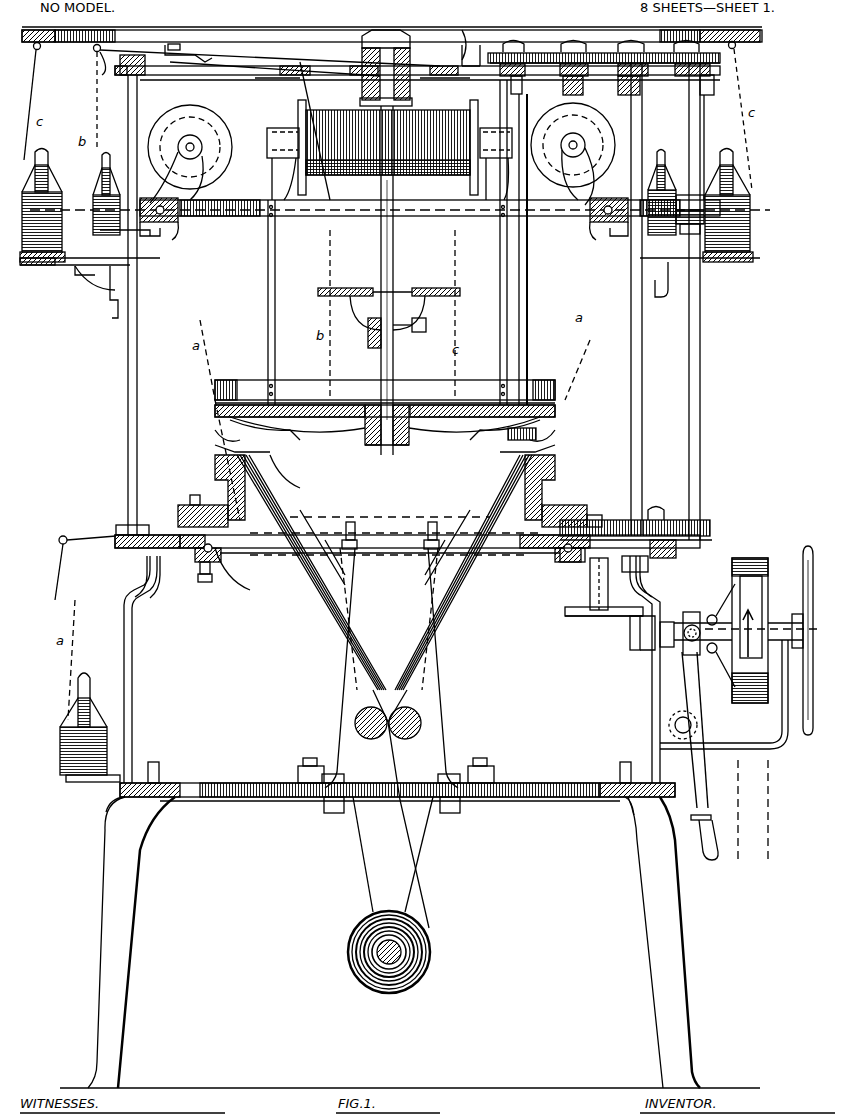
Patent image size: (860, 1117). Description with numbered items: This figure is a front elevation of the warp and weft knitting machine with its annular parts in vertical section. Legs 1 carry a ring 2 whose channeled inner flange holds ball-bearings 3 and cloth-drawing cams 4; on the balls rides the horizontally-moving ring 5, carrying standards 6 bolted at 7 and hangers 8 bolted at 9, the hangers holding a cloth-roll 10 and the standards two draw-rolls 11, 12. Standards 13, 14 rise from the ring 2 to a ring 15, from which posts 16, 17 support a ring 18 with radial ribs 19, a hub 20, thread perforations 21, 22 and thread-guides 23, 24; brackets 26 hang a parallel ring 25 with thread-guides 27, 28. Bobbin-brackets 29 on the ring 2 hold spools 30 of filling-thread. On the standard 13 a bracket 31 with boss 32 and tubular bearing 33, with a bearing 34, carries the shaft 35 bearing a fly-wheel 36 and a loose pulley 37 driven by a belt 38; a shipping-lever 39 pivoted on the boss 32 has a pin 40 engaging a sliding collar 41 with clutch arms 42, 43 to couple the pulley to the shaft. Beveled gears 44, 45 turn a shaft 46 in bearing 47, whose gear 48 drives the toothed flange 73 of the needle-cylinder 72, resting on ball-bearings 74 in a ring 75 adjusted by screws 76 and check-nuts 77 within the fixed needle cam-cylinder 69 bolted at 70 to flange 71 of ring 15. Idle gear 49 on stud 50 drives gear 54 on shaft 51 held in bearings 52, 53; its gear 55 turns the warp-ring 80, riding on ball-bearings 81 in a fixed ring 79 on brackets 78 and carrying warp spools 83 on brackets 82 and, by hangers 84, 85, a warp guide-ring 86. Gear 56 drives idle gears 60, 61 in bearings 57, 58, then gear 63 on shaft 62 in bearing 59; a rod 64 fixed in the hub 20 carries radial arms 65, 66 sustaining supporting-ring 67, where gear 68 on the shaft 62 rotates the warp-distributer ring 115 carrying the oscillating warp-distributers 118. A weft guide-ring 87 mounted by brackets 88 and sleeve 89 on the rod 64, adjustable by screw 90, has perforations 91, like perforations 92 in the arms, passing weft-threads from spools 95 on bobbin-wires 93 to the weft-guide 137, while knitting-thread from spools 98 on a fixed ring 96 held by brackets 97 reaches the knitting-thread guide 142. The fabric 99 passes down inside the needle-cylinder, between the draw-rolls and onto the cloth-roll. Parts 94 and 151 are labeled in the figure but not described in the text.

The legs or standards 1 is at (103, 973).
The ring 2 is at (118, 812).
The ball-bearings 3 is at (180, 785).
The cloth-drawing cams 4 is at (389, 763).
The horizontally-moving ring 5 is at (542, 784).
The standards 6 is at (438, 688).
The bolts 7 is at (300, 766).
The hangers 8 is at (362, 872).
The bolts 9 is at (330, 813).
The cloth-roll 10 is at (391, 954).
The draw-roll 11 is at (371, 731).
The draw-roll 12 is at (405, 731).
The standard 13 is at (652, 694).
The standard 14 is at (133, 688).
The ring 15 is at (162, 578).
The post 16 is at (128, 461).
The post 17 is at (642, 404).
The ring 18 is at (333, 66).
The radial ribs 19 is at (360, 90).
The hub 20 is at (410, 52).
The perforation 21 is at (300, 62).
The perforation 22 is at (481, 50).
The thread-guide 23 is at (93, 52).
The thread-guide 24 is at (462, 58).
The ring 25 is at (758, 36).
The brackets 26 is at (200, 55).
The thread-guide 27 is at (34, 48).
The thread-guide 28 is at (737, 48).
The bobbin-brackets 29 is at (70, 782).
The bobbins or spools of filling-thread 30 is at (62, 750).
The bracket 31 is at (782, 752).
The boss 32 is at (698, 728).
The sleeve or tubular bearing 33 is at (785, 622).
The tubular bearing 34 is at (666, 622).
The shaft 35 is at (630, 640).
The fly-wheel 36 is at (806, 546).
The pulley 37 is at (760, 566).
The belt 38 is at (753, 839).
The shipping-lever 39 is at (708, 780).
The stud or pin 40 is at (694, 624).
The sliding collar 41 is at (720, 665).
The clutch arm 42 is at (710, 615).
The clutch arm 43 is at (703, 667).
The beveled gear 44 is at (642, 652).
The beveled gear 45 is at (565, 611).
The shaft 46 is at (600, 618).
The tubular bearing 47 is at (590, 580).
The gear 48 is at (604, 511).
The idle or intermediate gear 49 is at (660, 504).
The stud 50 is at (648, 566).
The shaft 51 is at (700, 452).
The bearing 52 is at (678, 548).
The bearing 53 is at (711, 137).
The gear 54 is at (712, 522).
The gear 55 is at (690, 195).
The gear 56 is at (715, 63).
The tubular bearing 57 is at (640, 85).
The tubular bearing 58 is at (583, 85).
The tubular bearing 59 is at (522, 85).
The idle or intermediate gear 60 is at (650, 53).
The idle or intermediate gear 61 is at (575, 44).
The shaft 62 is at (522, 284).
The gear 63 is at (513, 44).
The rod 64 is at (394, 356).
The radial arm 65 is at (348, 432).
The radial arm 66 is at (402, 446).
The supporting-ring 67 is at (292, 440).
The gear 68 is at (476, 440).
The needle cam-cylinder 69 is at (556, 476).
The bolts 70 is at (216, 490).
The annular flange 71 is at (178, 512).
The needle-cylinder 72 is at (407, 535).
The annular flange 73 is at (578, 510).
The ball-bearings 74 is at (220, 560).
The ring 75 is at (560, 556).
The adjusting-screws 76 is at (205, 582).
The check-nuts 77 is at (235, 580).
The brackets 78 is at (165, 225).
The fixed ring 79 is at (140, 235).
The traveling ring (warp-ring) 80 is at (232, 202).
The ball-bearings 81 is at (175, 240).
The brackets 82 is at (202, 144).
The spools of warp-threads 83 is at (210, 118).
The hanger 84 is at (276, 318).
The hanger 85 is at (500, 306).
The warp guide-ring 86 is at (215, 392).
The weft guide-ring 87 is at (420, 290).
The brackets 88 is at (360, 312).
The sleeve 89 is at (368, 345).
The screw 90 is at (427, 326).
The perforations 91 is at (340, 292).
The perforations 92 is at (335, 408).
The bobbin-wires 93 is at (110, 233).
The bar 94 is at (100, 283).
The spools of weft-thread 95 is at (95, 208).
The fixed ring 96 is at (55, 265).
The brackets 97 is at (108, 305).
The spools of knitting-thread 98 is at (50, 198).
The fabric 99 is at (388, 572).
The warp-distributer ring 115 is at (218, 436).
The warp-distributers 118 is at (218, 454).
The weft-guide 137 is at (300, 480).
The knitting-thread guide 142 is at (516, 442).
The pin 151 is at (72, 566).